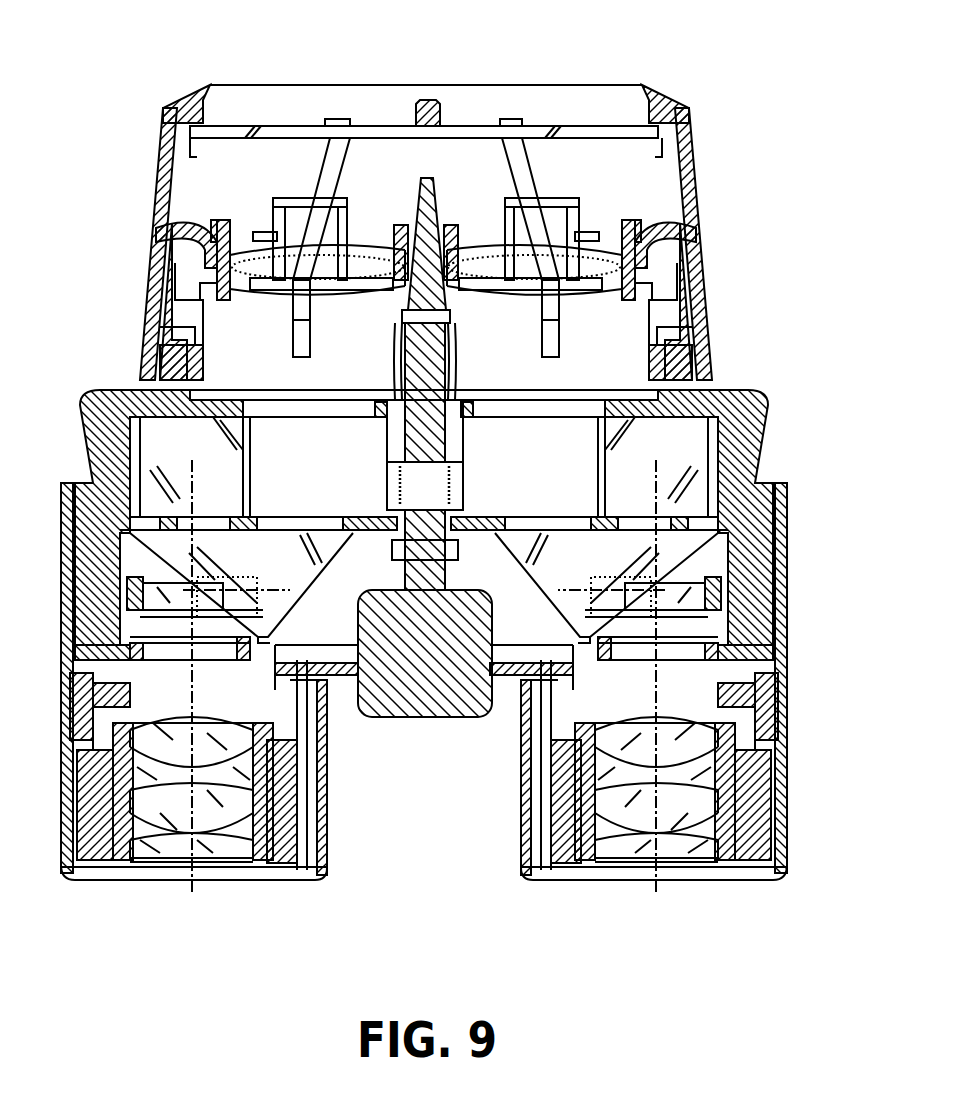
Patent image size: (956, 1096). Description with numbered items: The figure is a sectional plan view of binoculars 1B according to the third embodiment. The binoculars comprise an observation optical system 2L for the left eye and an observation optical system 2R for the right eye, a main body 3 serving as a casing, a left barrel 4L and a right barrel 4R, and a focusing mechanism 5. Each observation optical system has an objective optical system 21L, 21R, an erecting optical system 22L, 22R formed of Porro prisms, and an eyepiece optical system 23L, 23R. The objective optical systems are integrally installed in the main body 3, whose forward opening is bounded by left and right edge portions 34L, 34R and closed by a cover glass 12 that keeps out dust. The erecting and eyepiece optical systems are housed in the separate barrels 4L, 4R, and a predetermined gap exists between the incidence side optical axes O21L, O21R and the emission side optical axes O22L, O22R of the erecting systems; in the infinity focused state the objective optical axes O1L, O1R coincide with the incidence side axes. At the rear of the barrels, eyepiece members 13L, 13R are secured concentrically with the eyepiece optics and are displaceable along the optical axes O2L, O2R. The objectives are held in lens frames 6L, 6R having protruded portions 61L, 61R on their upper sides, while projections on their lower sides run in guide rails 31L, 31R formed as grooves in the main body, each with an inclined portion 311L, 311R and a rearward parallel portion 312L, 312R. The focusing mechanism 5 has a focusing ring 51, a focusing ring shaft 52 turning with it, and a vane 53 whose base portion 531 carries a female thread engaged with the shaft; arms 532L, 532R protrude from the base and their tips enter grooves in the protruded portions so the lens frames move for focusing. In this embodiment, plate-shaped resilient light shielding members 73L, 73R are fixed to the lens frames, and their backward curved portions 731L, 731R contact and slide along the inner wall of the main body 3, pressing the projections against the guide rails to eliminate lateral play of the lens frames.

The binoculars 1B is at (533, 72).
The main body 3 is at (698, 138).
The left edge portion of the forward opening 34L is at (187, 103).
The right edge portion of the forward opening 34R is at (667, 108).
The cover glass 12 is at (313, 127).
The left light shielding member 73L is at (172, 230).
The right light shielding member 73R is at (660, 230).
The left curved portion 731L is at (165, 254).
The right curved portion 731R is at (710, 251).
The left protruded portion 61L is at (273, 205).
The right protruded portion 61R is at (580, 213).
The left objective optical system 21L is at (230, 256).
The right objective optical system 21R is at (612, 258).
The left arm 532L is at (370, 247).
The right arm 532R is at (482, 247).
The left lens frame 6L is at (205, 265).
The right lens frame 6R is at (640, 266).
The left guide rail 31L is at (160, 354).
The right guide rail 31R is at (712, 356).
The left inclined portion 311L is at (276, 333).
The left parallel portion 312L is at (276, 366).
The right inclined portion 311R is at (636, 350).
The right parallel portion 312R is at (636, 386).
The optical axis of the left objective optical system O1L is at (312, 330).
The optical axis of the right objective optical system O1R is at (547, 326).
The left barrel 4L is at (61, 600).
The right barrel 4R is at (787, 604).
The left erecting optical system 22L is at (263, 538).
The right erecting optical system 22R is at (585, 538).
The focusing ring shaft 52 is at (422, 420).
The vane 53 is at (465, 475).
The base portion 531 is at (398, 486).
The left incidence side optical axis O21L is at (290, 590).
The right incidence side optical axis O21R is at (568, 548).
The left emission side optical axis O22L is at (192, 660).
The right emission side optical axis O22R is at (655, 660).
The focusing ring 51 is at (430, 680).
The focusing mechanism 5 is at (431, 480).
The left eyepiece member 13L is at (325, 862).
The right eyepiece member 13R is at (524, 859).
The left eyepiece optical system 23L is at (62, 829).
The right eyepiece optical system 23R is at (788, 793).
The observation optical system for the left eye 2L is at (160, 870).
The observation optical system for the right eye 2R is at (625, 870).
The left eyepiece optical axis O2L is at (192, 897).
The right eyepiece optical axis O2R is at (656, 897).